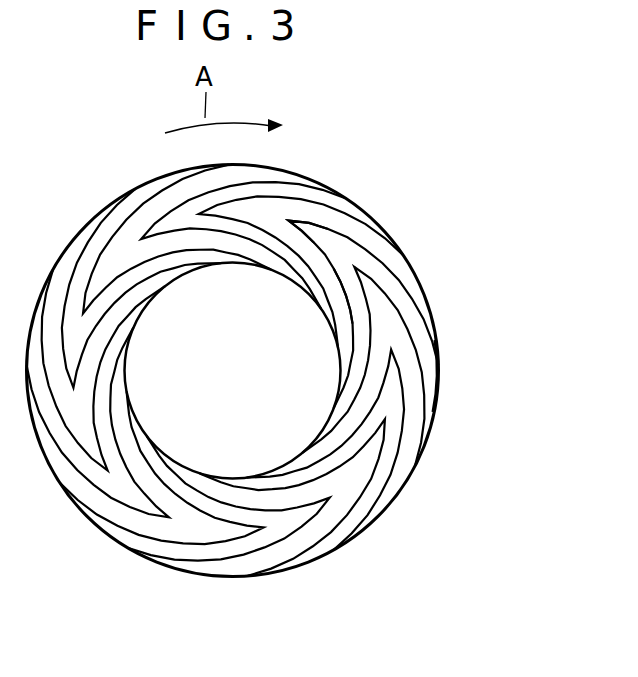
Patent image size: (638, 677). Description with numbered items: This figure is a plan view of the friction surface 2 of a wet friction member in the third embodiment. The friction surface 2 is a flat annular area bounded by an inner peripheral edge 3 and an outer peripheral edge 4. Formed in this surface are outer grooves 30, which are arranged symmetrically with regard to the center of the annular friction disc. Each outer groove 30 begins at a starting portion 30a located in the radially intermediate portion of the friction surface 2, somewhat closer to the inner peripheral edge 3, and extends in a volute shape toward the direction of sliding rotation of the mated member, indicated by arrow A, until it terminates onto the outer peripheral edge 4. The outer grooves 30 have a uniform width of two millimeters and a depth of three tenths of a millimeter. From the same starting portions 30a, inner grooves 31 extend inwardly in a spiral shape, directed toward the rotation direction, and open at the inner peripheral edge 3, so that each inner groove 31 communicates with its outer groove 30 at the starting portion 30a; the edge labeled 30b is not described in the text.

The friction surface 2 is at (260, 378).
The inner peripheral edge 3 is at (285, 466).
The outer peripheral edge 4 is at (201, 578).
The outer grooves 30 is at (298, 183).
The starting portions 30a is at (291, 219).
The blade outer edge 30b is at (437, 383).
The inner grooves 31 is at (357, 337).